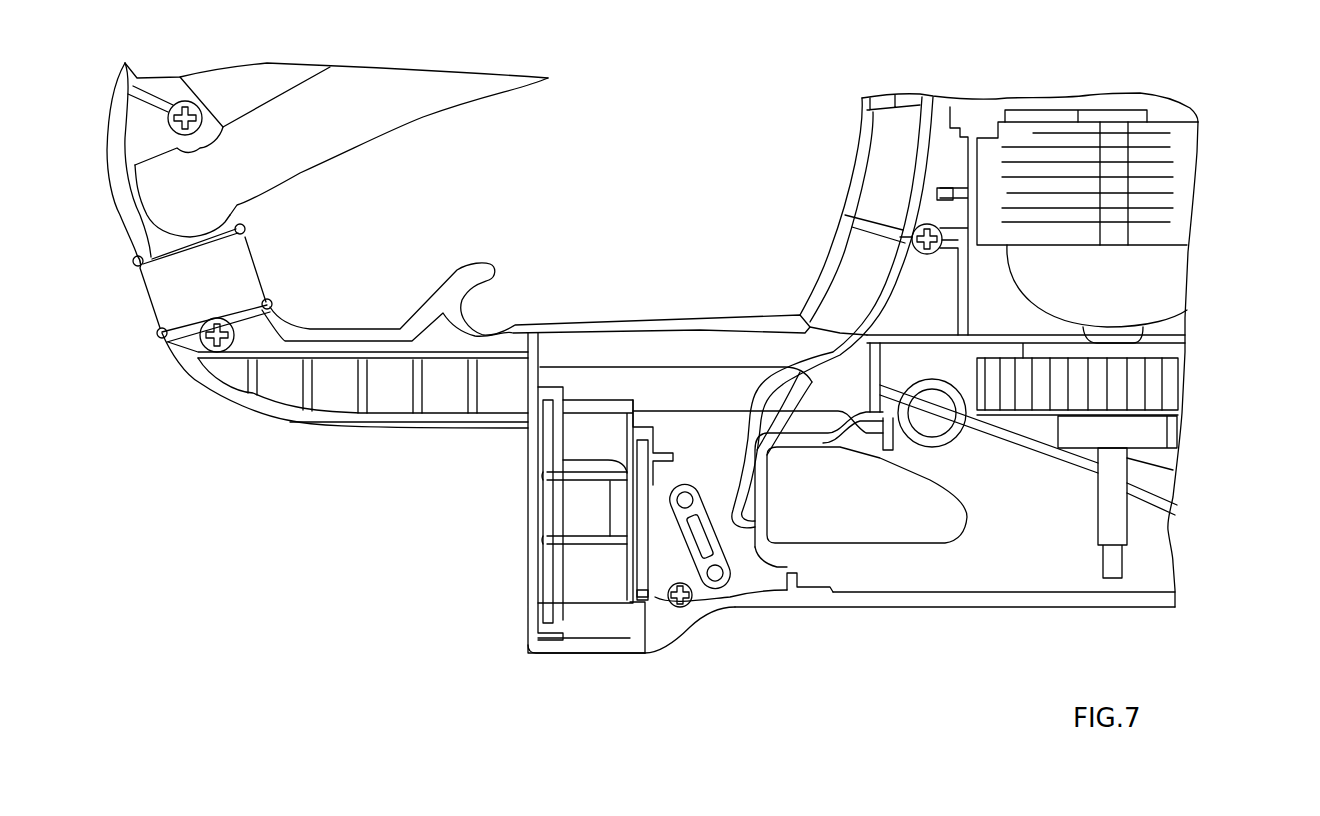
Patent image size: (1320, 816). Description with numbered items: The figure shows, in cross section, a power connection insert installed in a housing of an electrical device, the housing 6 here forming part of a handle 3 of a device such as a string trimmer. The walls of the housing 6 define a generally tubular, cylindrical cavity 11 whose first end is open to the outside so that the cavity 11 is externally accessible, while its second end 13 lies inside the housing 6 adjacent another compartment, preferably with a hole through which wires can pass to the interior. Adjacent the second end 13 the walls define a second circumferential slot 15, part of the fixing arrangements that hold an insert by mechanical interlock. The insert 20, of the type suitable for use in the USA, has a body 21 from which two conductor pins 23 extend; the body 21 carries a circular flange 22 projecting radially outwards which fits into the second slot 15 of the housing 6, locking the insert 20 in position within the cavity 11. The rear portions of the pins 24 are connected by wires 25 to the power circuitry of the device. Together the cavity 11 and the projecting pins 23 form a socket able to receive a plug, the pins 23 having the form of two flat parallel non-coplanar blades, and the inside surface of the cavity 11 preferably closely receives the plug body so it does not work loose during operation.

The handle 3 is at (1187, 330).
The housing 6 is at (1160, 471).
The cavity 11 is at (587, 445).
The second end 13 is at (600, 400).
The second circumferential slot 15 is at (697, 660).
The insert 20 is at (589, 682).
The body 21 is at (643, 552).
The circular flange 22 is at (642, 593).
The conductor pins 23 is at (575, 480).
The rear portions of the pins 24 is at (663, 478).
The wires 25 is at (880, 275).